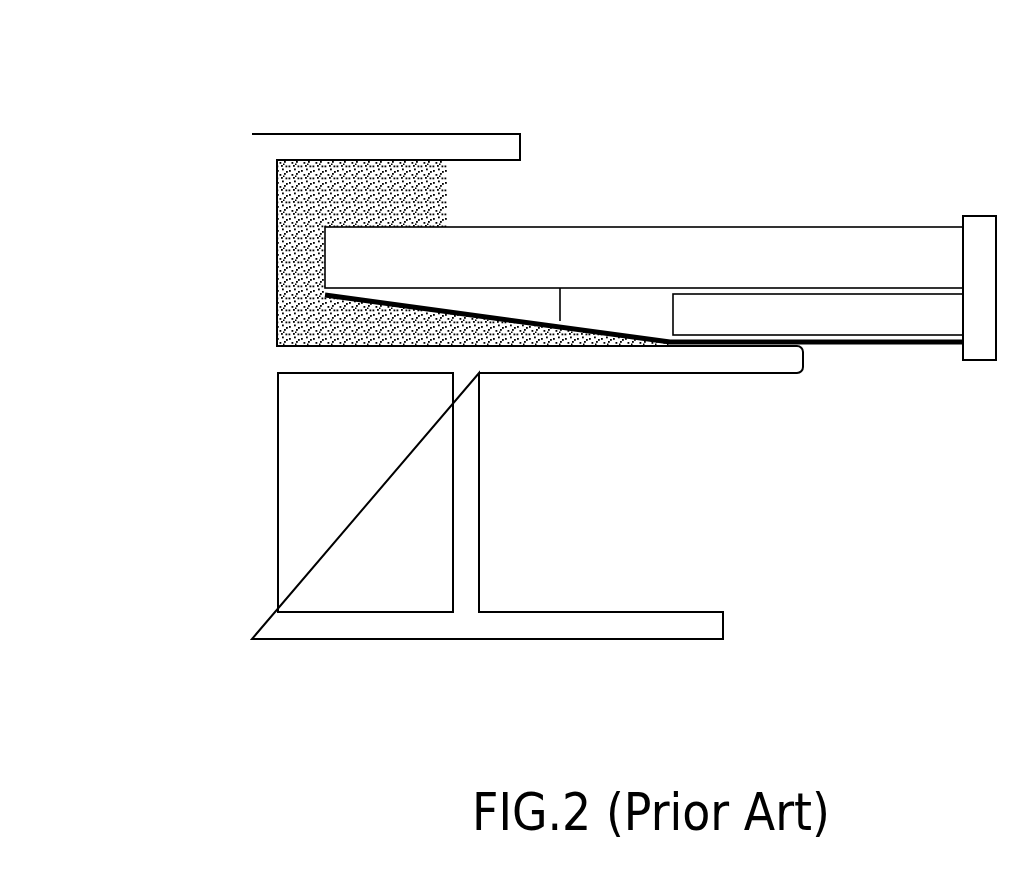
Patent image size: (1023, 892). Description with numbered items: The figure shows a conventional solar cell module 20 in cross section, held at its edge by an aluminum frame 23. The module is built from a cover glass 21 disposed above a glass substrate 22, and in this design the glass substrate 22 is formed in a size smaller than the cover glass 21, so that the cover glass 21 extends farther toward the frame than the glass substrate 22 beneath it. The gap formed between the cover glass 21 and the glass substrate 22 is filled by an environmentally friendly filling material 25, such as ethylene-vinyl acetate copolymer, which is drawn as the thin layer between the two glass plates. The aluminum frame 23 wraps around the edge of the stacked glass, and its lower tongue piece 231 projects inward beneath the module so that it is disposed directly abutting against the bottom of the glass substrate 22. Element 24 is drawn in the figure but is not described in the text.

The solar cell module 20 is at (634, 96).
The cover glass 21 is at (813, 256).
The glass substrate 22 is at (888, 323).
The aluminum frame 23 is at (252, 385).
The lower tongue piece 231 is at (729, 374).
The spacer / cushion 24 is at (615, 305).
The filling material 25 is at (926, 293).